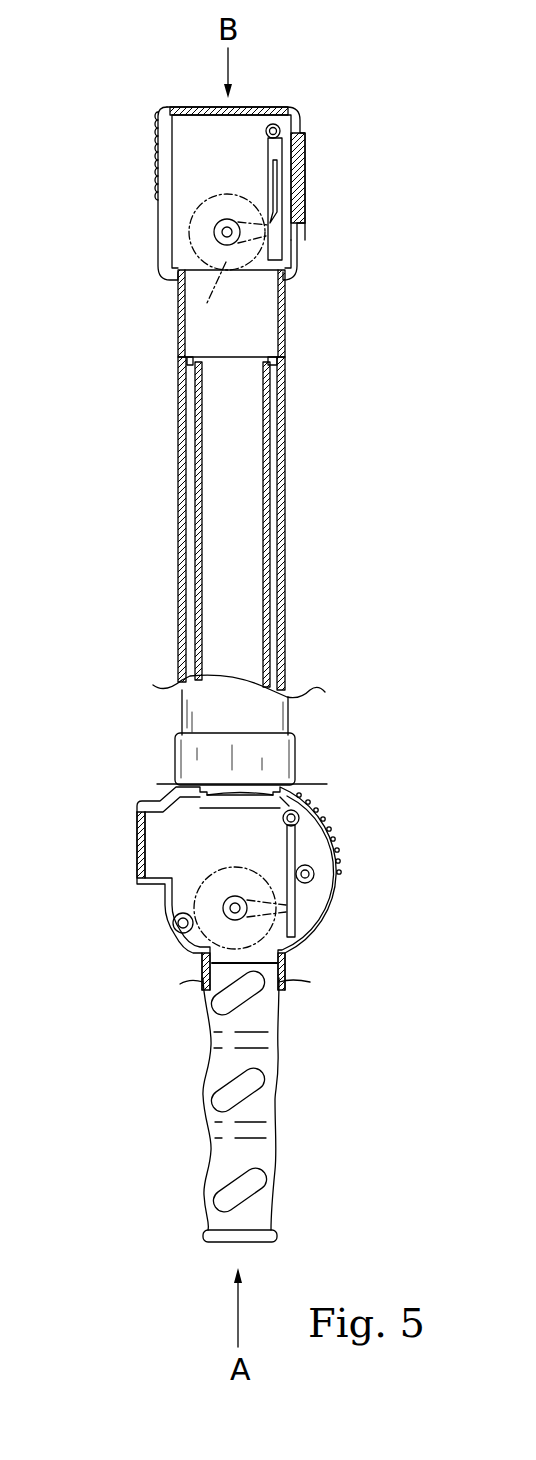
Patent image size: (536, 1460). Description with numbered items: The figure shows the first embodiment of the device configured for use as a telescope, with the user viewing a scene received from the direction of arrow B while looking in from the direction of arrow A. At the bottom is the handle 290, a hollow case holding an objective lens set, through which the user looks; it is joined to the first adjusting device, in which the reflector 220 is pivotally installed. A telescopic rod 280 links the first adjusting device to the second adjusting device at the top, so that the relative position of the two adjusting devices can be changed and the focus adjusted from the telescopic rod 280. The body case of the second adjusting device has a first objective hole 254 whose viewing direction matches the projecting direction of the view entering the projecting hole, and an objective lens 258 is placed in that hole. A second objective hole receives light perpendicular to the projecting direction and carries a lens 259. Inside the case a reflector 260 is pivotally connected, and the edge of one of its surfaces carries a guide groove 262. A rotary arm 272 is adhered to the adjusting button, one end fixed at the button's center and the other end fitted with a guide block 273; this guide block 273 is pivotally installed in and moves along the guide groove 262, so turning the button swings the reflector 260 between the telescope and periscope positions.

The reflector 220 is at (297, 937).
The first objective hole 254 is at (267, 107).
The objective lens 258 is at (188, 108).
The lens 259 is at (303, 220).
The reflector 260 is at (293, 265).
The guide groove 262 is at (273, 185).
The rotary arm 272 is at (200, 313).
The guide block 273 is at (273, 220).
The telescopic rod 280 is at (288, 523).
The handle 290 is at (263, 1100).